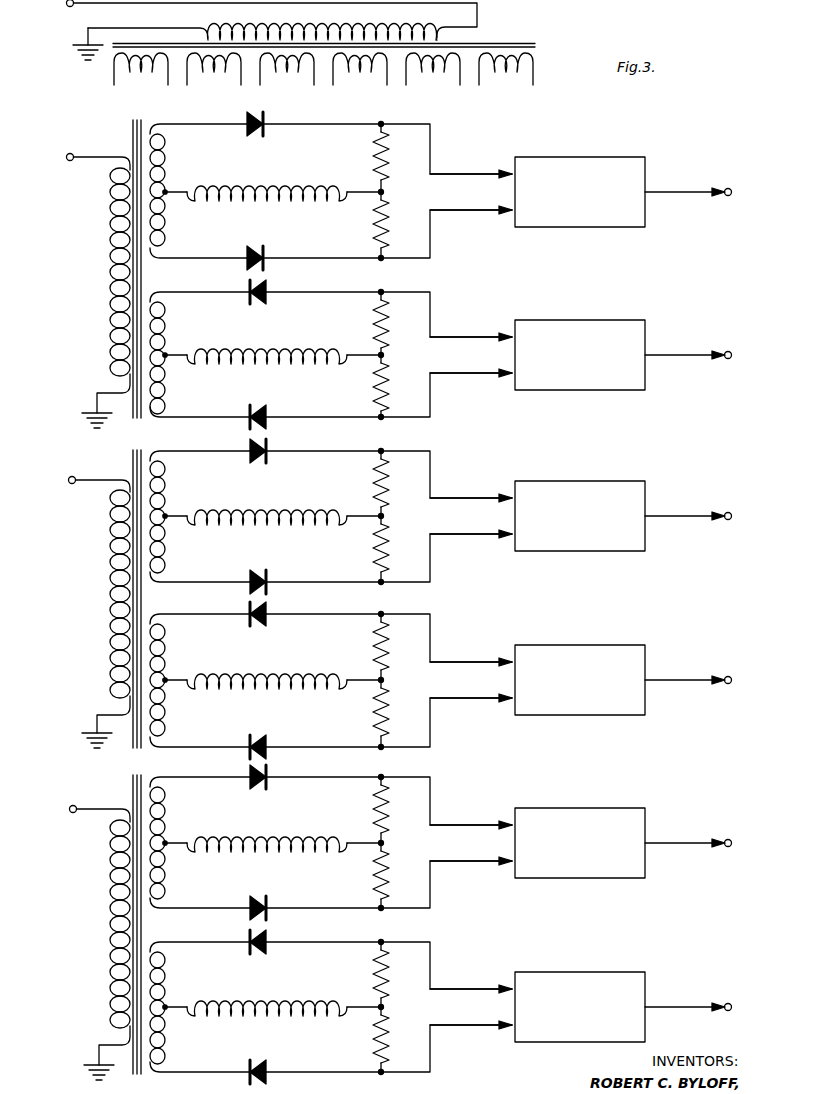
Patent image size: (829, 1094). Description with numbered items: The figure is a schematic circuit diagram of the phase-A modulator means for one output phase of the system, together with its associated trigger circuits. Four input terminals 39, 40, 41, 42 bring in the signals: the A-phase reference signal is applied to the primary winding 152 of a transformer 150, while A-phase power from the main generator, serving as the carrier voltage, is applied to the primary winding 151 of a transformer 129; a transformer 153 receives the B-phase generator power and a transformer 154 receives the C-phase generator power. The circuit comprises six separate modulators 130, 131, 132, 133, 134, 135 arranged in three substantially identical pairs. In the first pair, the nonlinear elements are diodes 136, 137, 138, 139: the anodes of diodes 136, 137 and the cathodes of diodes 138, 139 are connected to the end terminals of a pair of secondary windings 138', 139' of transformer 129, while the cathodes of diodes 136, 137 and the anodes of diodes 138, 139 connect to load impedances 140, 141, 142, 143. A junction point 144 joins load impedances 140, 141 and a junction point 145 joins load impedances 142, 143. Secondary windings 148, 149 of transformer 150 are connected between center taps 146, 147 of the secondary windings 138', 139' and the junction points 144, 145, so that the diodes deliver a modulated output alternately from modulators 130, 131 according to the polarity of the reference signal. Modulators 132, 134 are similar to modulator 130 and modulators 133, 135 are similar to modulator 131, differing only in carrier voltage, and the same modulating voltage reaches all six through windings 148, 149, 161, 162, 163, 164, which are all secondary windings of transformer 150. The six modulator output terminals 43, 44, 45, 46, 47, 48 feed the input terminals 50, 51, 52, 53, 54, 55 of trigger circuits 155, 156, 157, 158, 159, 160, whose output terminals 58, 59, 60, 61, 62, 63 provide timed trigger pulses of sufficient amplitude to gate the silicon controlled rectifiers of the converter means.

The input terminal 39 is at (69, 7).
The input terminal 40 is at (74, 148).
The input terminal 41 is at (70, 484).
The input terminal 42 is at (73, 814).
The output terminal 43 is at (381, 124).
The output terminal 44 is at (381, 292).
The output terminal 45 is at (381, 451).
The output terminal 46 is at (381, 614).
The output terminal 47 is at (381, 777).
The output terminal 48 is at (381, 942).
The input terminal 50 is at (510, 173).
The input terminal 51 is at (510, 336).
The input terminal 52 is at (510, 496).
The input terminal 53 is at (510, 659).
The input terminal 54 is at (510, 823).
The input terminal 55 is at (510, 986).
The output terminal 58 is at (740, 180).
The output terminal 59 is at (740, 342).
The output terminal 60 is at (740, 502).
The output terminal 61 is at (740, 665).
The output terminal 62 is at (740, 828).
The output terminal 63 is at (740, 991).
The transformer 129 is at (132, 140).
The modulator 130 is at (330, 163).
The modulator 131 is at (335, 332).
The modulator 132 is at (335, 489).
The modulator 133 is at (338, 653).
The modulator 134 is at (338, 817).
The modulator 135 is at (338, 979).
The diode 136 is at (263, 124).
The diode 137 is at (263, 256).
The diode 138 is at (274, 290).
The diode 139 is at (273, 414).
The secondary winding 138' is at (176, 190).
The secondary winding 139' is at (184, 358).
The load impedance 140 is at (388, 160).
The load impedance 141 is at (388, 229).
The load impedance 142 is at (388, 328).
The load impedance 143 is at (388, 392).
The junction point 144 is at (384, 192).
The junction point 145 is at (384, 355).
The center tap 146 is at (167, 192).
The center tap 147 is at (167, 355).
The secondary winding 148 is at (284, 206).
The secondary winding 149 is at (274, 346).
The transformer 150 is at (470, 42).
The primary winding 151 is at (112, 258).
The primary winding 152 is at (218, 30).
The transformer 153 is at (128, 476).
The transformer 154 is at (128, 806).
The trigger circuit 155 is at (564, 181).
The trigger circuit 156 is at (564, 344).
The trigger circuit 157 is at (564, 505).
The trigger circuit 158 is at (564, 669).
The trigger circuit 159 is at (564, 832).
The trigger circuit 160 is at (564, 996).
The secondary winding 161 is at (291, 506).
The secondary winding 162 is at (291, 669).
The secondary winding 163 is at (265, 837).
The secondary winding 164 is at (265, 999).